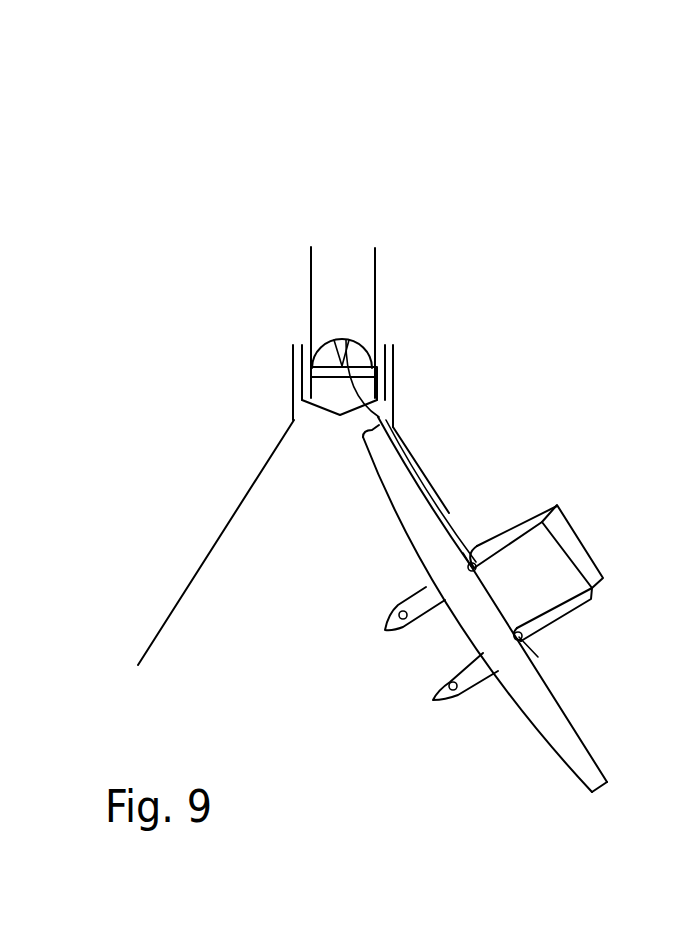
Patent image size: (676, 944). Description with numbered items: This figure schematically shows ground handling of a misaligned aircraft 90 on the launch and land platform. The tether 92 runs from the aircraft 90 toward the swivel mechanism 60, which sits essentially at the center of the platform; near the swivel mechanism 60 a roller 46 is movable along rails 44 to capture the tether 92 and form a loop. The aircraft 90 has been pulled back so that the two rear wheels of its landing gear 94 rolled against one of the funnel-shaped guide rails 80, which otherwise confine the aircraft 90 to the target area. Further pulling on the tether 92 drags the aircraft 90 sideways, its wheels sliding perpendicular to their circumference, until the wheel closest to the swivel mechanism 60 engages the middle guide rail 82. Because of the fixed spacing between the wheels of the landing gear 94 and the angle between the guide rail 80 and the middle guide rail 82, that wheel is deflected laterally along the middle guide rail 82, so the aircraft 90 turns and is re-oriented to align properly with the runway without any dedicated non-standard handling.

The rails 44 is at (310, 303).
The roller 46 is at (327, 373).
The swivel mechanism 60 is at (343, 366).
The guide rails 80 is at (190, 582).
The middle guide rail 82 is at (317, 405).
The aircraft 90 is at (480, 623).
The tether 92 is at (380, 420).
The landing gear 94 is at (480, 545).